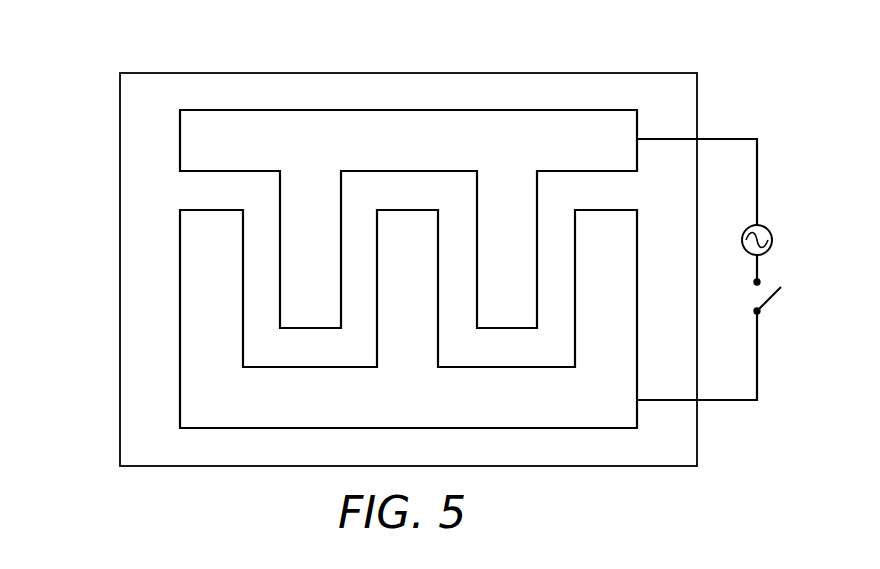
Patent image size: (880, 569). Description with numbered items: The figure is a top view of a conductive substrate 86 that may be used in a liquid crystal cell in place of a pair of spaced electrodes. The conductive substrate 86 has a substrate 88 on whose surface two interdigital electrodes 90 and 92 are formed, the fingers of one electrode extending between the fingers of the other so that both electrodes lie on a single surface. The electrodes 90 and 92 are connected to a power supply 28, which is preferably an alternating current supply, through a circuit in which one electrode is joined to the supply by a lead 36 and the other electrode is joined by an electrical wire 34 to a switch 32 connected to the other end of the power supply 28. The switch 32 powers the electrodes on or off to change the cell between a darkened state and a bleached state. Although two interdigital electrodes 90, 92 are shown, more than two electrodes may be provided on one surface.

The conductive substrate 86 is at (603, 74).
The substrate 88 is at (497, 72).
The interdigital electrode 92 is at (189, 142).
The interdigital electrode 90 is at (200, 387).
The first lead 36 is at (724, 138).
The power supply 28 is at (767, 230).
The switch 32 is at (765, 303).
The electrical wire 34 is at (732, 402).